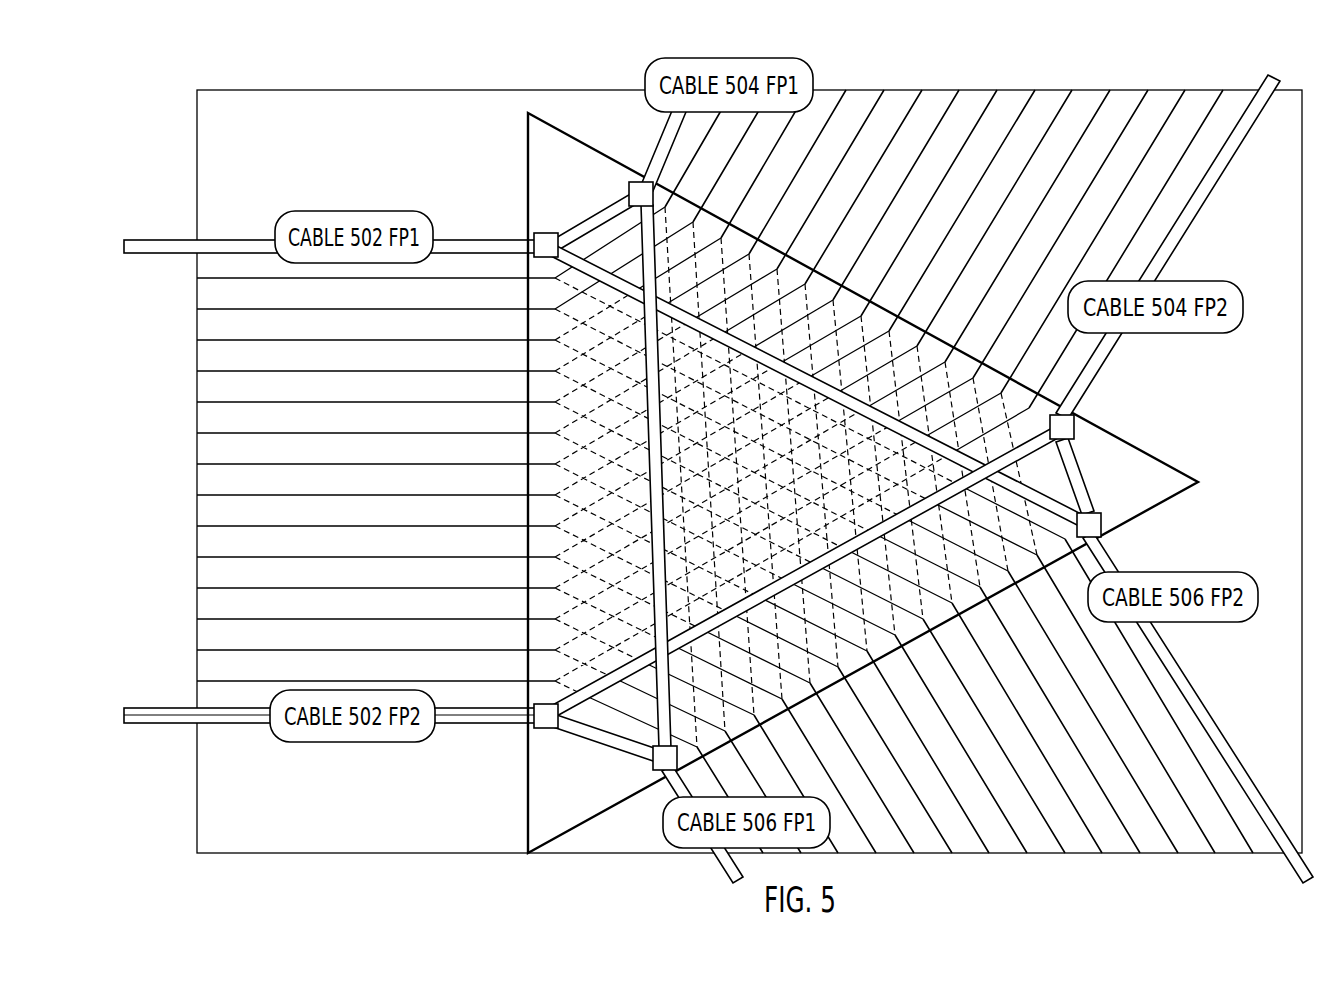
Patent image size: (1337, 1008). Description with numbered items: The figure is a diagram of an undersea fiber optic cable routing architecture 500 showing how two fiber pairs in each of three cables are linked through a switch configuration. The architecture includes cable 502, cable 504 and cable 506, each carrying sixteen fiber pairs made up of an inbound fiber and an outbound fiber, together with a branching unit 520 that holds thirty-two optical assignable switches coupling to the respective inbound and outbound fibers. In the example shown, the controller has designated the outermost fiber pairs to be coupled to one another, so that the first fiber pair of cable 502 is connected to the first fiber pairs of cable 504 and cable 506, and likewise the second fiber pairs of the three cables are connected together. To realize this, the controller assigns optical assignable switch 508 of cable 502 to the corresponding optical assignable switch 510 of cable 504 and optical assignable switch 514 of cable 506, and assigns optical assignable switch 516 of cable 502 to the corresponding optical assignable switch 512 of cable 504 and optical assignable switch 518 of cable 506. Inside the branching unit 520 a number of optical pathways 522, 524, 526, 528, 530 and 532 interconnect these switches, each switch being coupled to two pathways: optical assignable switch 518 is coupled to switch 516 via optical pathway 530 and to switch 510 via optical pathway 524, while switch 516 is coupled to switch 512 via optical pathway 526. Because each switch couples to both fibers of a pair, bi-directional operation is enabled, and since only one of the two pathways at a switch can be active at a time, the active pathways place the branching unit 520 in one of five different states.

The undersea fiber optic cable routing architecture 500 is at (988, 72).
The cable 502 is at (405, 492).
The cable 504 is at (1000, 185).
The cable 506 is at (1085, 796).
The optical assignable switch 508 is at (542, 232).
The optical assignable switch 510 is at (630, 183).
The optical assignable switch 512 is at (1075, 432).
The optical assignable switch 514 is at (1100, 536).
The optical assignable switch 516 is at (541, 730).
The optical assignable switch 518 is at (655, 773).
The branching unit 520 is at (525, 104).
The optical pathway 522 is at (838, 397).
The optical pathway 524 is at (671, 457).
The optical pathway 526 is at (823, 569).
The optical pathway 528 is at (1068, 451).
The optical pathway 530 is at (622, 748).
The optical pathway 532 is at (627, 198).